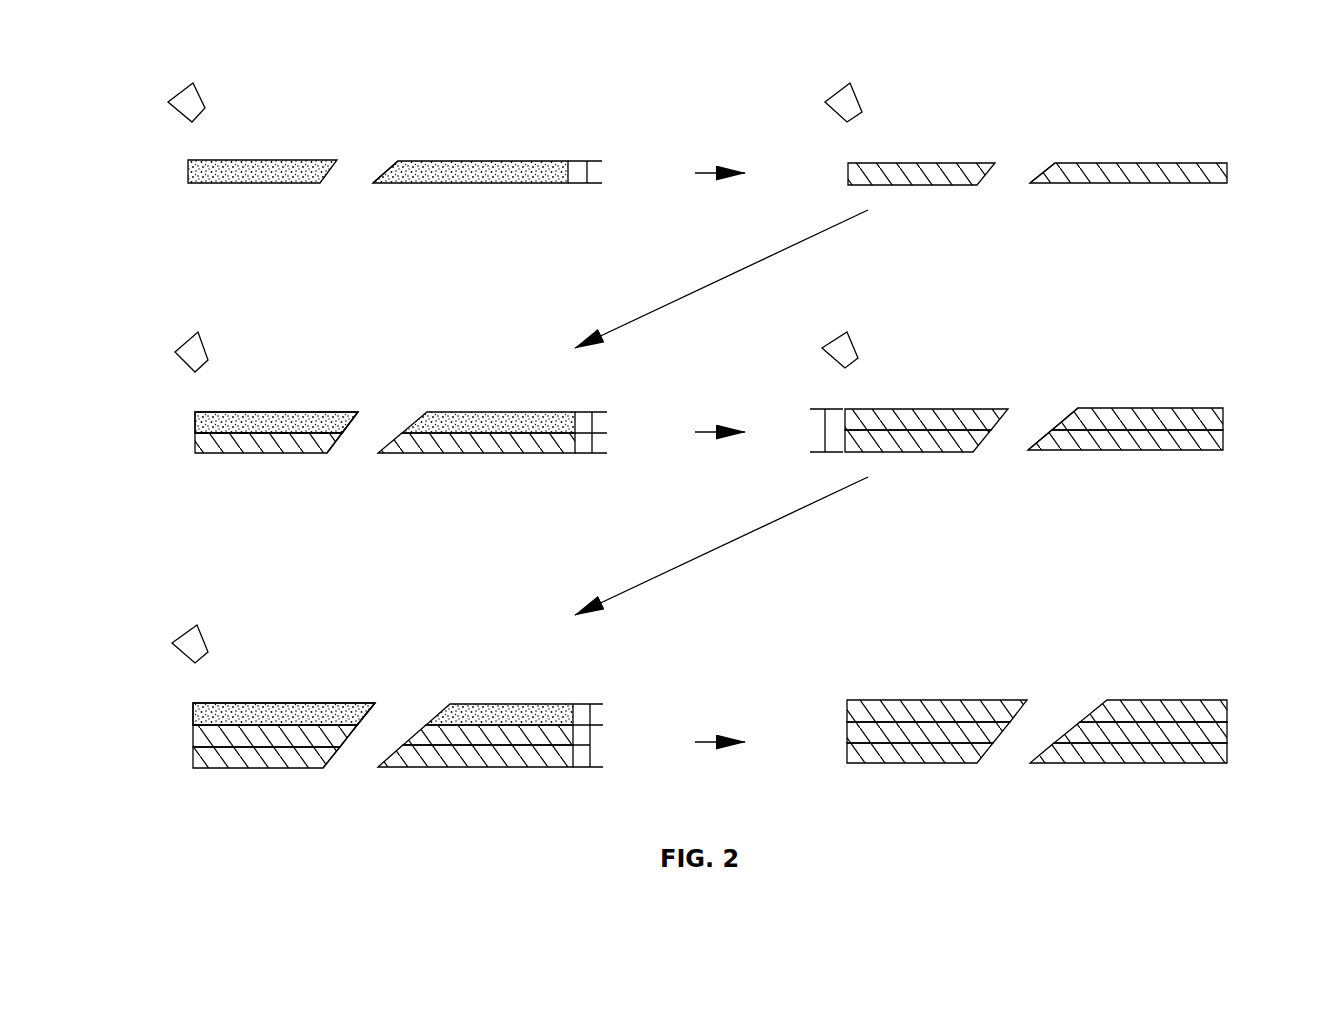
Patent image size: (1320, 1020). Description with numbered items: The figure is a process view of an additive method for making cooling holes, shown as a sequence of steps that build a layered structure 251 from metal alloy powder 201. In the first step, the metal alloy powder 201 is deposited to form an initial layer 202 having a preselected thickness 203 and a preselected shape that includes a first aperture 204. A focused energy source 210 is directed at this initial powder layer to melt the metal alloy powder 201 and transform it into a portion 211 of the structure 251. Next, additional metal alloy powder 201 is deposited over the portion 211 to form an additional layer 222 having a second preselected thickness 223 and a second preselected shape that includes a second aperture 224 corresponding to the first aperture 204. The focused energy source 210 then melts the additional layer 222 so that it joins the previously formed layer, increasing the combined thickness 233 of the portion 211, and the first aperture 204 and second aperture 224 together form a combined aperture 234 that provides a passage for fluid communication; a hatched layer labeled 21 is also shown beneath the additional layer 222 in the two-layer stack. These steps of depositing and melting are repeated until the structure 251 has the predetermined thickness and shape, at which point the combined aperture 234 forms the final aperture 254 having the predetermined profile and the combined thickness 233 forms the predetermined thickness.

The metal alloy powder 201 is at (253, 183).
The initial layer 202 is at (188, 177).
The preselected thickness 203 is at (590, 172).
The first aperture 204 is at (367, 163).
The focused energy source 210 is at (202, 97).
The portion 211 is at (847, 172).
The second layer of stack 21 is at (195, 445).
The additional layer 222 is at (195, 425).
The second preselected thickness 223 is at (593, 423).
The second aperture 224 is at (390, 405).
The combined thickness 233 is at (823, 430).
The combined aperture 234 is at (1037, 405).
The structure 251 is at (847, 733).
The final aperture 254 is at (1063, 695).